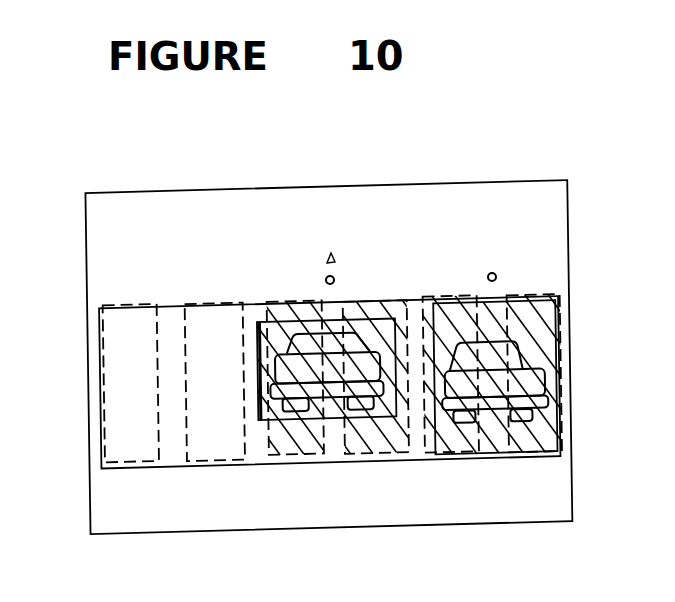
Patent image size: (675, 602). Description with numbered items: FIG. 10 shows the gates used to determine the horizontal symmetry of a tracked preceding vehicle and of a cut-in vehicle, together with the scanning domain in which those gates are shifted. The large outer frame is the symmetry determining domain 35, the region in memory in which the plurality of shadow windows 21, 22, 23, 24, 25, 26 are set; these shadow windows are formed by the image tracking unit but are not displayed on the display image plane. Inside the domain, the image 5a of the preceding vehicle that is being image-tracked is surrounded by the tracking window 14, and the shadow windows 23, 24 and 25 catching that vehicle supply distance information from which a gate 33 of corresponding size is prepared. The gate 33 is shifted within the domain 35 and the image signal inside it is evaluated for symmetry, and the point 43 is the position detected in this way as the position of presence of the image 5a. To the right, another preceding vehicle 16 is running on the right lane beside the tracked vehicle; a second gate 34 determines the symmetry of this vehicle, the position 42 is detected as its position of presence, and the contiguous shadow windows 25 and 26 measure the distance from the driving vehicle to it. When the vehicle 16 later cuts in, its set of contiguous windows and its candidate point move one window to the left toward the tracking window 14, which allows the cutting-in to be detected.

The image of preceding vehicle 5a is at (304, 345).
The tracking window 14 is at (258, 347).
The another preceding vehicle 16 is at (545, 353).
The shadow window 21 is at (132, 463).
The shadow window 22 is at (228, 463).
The shadow window 23 is at (293, 461).
The shadow window 24 is at (375, 456).
The shadow window 25 is at (453, 455).
The shadow window 26 is at (533, 452).
The gate 33 is at (400, 300).
The gate 34 is at (453, 303).
The symmetry determining domain 35 is at (93, 426).
The position of presence of preceding vehicle 16 42 is at (492, 272).
The point of presence of image 5a 43 is at (334, 255).